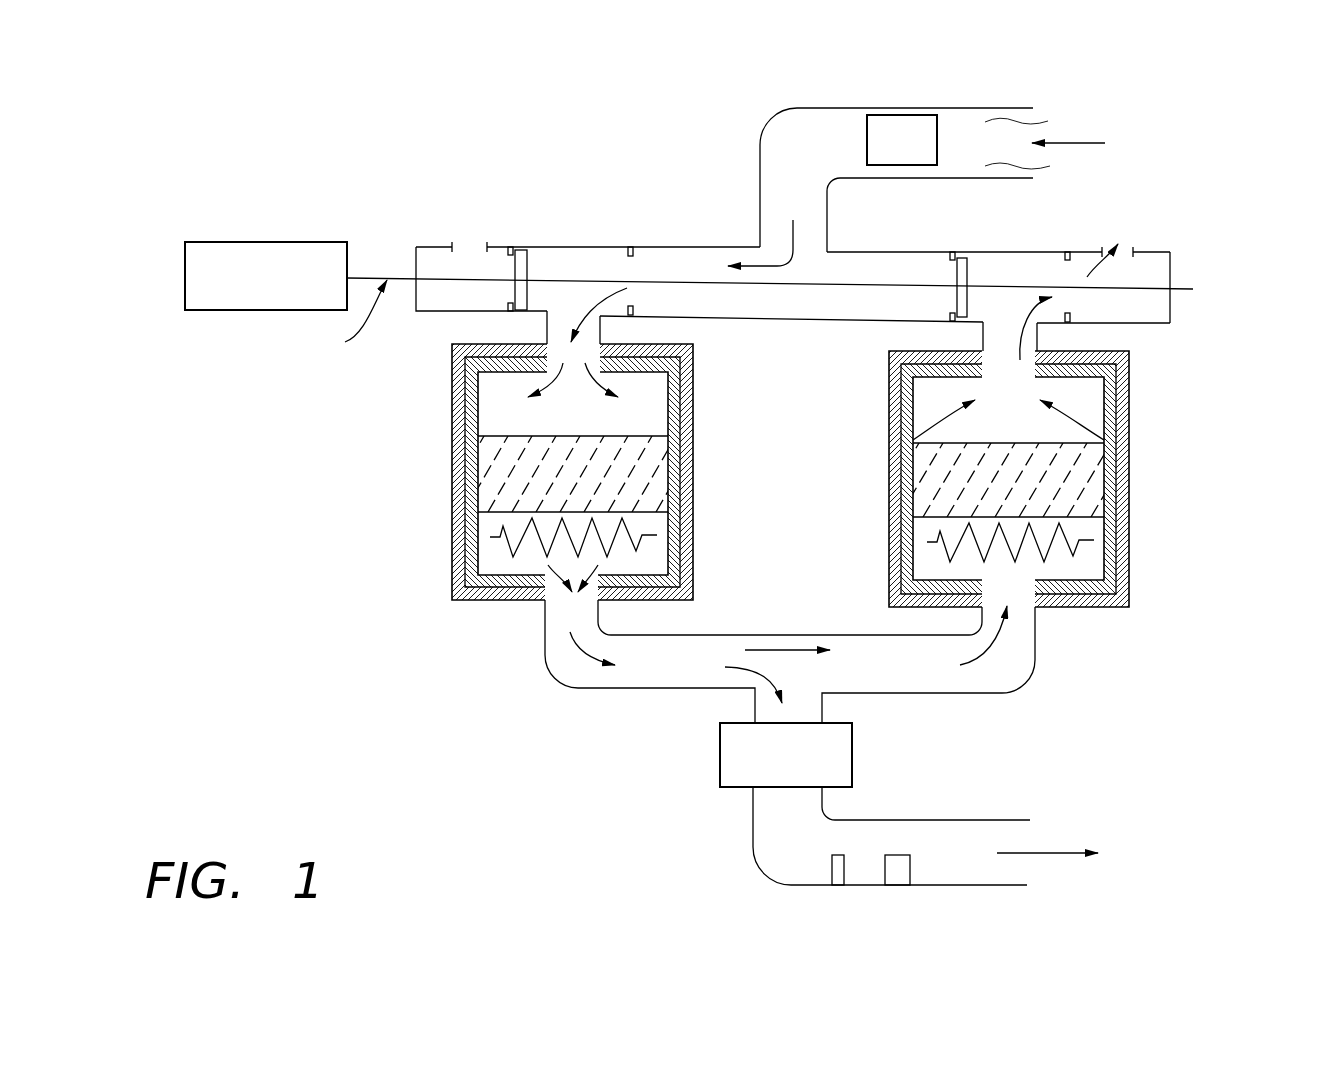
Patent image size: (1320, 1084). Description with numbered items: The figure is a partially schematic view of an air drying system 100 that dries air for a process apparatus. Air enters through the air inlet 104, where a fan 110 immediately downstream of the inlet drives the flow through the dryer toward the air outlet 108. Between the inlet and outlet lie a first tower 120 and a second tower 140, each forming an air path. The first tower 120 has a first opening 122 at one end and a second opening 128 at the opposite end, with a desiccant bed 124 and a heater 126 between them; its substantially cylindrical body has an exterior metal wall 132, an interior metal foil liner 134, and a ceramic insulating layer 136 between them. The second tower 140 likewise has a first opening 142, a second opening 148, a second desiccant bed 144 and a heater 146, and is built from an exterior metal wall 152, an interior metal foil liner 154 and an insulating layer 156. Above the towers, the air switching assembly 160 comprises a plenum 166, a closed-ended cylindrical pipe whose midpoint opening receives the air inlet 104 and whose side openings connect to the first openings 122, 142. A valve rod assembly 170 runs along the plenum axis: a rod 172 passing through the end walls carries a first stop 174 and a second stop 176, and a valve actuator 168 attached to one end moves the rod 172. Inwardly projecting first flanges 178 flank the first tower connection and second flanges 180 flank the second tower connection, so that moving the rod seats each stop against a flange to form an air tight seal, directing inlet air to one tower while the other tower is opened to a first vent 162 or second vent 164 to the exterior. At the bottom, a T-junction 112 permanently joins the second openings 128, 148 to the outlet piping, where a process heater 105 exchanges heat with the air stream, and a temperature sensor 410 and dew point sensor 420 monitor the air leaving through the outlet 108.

The air drying system 100 is at (1242, 101).
The air inlet 104 is at (917, 108).
The process heater 105 is at (852, 758).
The air outlet 108 is at (1013, 886).
The fan 110 is at (885, 115).
The T-junction 112 is at (718, 706).
The first tower 120 is at (525, 476).
The first opening 122 is at (555, 355).
The desiccant bed 124 is at (535, 488).
The heater 126 is at (507, 548).
The second opening 128 is at (575, 603).
The exterior metal wall 132 is at (693, 362).
The interior metal foil liner 134 is at (693, 434).
The insulating layer 136 is at (693, 400).
The second tower 140 is at (1031, 481).
The first opening 142 is at (1108, 405).
The second desiccant bed 144 is at (1062, 488).
The heater 146 is at (1080, 548).
The second opening 148 is at (1028, 635).
The exterior metal wall 152 is at (890, 484).
The interior metal foil liner 154 is at (910, 557).
The insulating layer 156 is at (910, 520).
The air switching assembly 160 is at (1190, 308).
The first vent 162 is at (465, 245).
The second vent 164 is at (1132, 247).
The plenum 166 is at (1170, 267).
The valve actuator 168 is at (262, 242).
The valve rod assembly 170 is at (342, 319).
The rod 172 is at (400, 277).
The first stop 174 is at (523, 252).
The second stop 176 is at (968, 268).
The first flanges 178 is at (508, 247).
The second flanges 180 is at (950, 254).
The temperature sensor 410 is at (830, 878).
The dew point sensor 420 is at (898, 869).